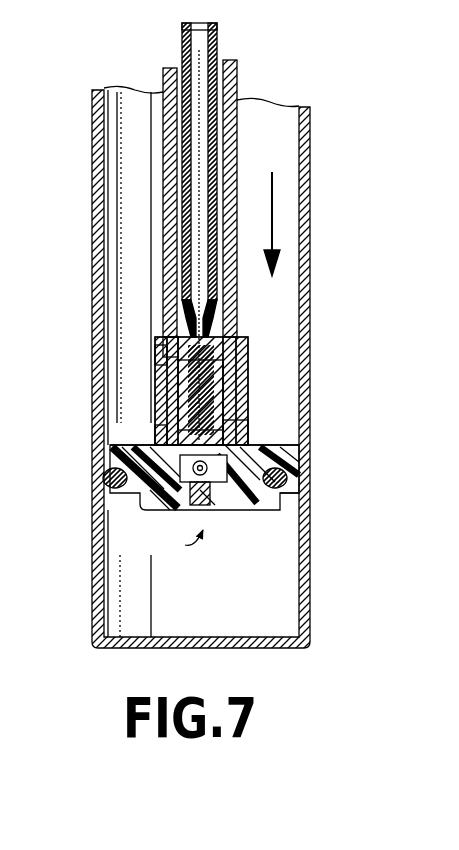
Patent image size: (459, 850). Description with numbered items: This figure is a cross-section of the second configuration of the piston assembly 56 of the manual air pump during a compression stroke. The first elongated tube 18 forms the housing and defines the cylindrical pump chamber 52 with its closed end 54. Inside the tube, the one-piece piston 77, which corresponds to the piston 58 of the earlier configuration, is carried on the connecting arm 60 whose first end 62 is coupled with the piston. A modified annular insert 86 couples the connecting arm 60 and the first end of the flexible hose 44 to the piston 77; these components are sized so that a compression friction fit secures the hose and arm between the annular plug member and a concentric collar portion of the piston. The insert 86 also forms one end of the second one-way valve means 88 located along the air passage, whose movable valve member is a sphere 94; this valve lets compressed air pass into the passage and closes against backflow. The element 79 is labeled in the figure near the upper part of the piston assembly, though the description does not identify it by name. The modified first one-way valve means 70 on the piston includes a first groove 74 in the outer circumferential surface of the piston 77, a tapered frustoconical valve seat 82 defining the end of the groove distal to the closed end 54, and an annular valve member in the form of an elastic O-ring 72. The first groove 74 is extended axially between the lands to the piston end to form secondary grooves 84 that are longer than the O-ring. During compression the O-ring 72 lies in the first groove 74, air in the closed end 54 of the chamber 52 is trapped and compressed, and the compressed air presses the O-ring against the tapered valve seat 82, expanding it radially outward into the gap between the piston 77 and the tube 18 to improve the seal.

The first elongated tube 18 is at (92, 262).
The flexible hose 44 is at (217, 47).
The pump chamber 52 is at (262, 588).
The closed end 54 is at (178, 648).
The piston assembly 56 is at (262, 358).
The piston 58 is at (251, 408).
The connecting arm 60 is at (243, 276).
The first end of connecting arm 62 is at (244, 336).
The first one-way valve means 70 is at (110, 503).
The annular valve member 72 is at (288, 478).
The first groove 74 is at (292, 498).
The one-piece piston 77 is at (250, 452).
The nozzle tip 79 is at (162, 342).
The tapered valve seat 82 is at (103, 472).
The secondary grooves 84 is at (137, 503).
The annular insert 86 is at (160, 356).
The second one-way valve means 88 is at (110, 447).
The sphere 94 is at (160, 437).